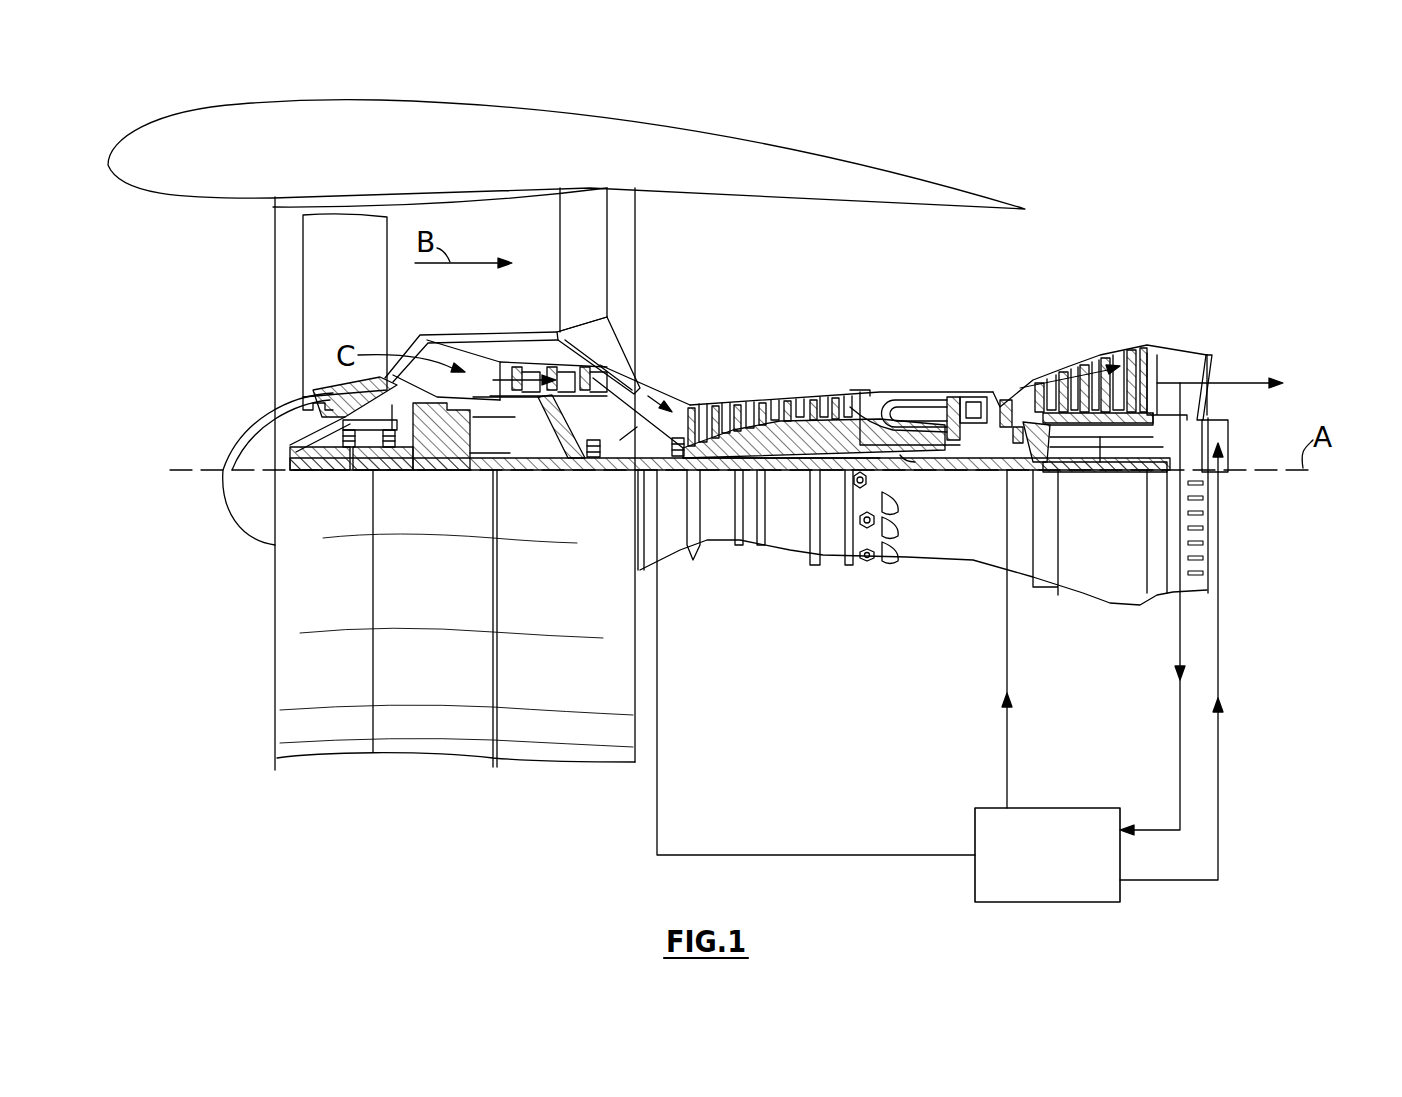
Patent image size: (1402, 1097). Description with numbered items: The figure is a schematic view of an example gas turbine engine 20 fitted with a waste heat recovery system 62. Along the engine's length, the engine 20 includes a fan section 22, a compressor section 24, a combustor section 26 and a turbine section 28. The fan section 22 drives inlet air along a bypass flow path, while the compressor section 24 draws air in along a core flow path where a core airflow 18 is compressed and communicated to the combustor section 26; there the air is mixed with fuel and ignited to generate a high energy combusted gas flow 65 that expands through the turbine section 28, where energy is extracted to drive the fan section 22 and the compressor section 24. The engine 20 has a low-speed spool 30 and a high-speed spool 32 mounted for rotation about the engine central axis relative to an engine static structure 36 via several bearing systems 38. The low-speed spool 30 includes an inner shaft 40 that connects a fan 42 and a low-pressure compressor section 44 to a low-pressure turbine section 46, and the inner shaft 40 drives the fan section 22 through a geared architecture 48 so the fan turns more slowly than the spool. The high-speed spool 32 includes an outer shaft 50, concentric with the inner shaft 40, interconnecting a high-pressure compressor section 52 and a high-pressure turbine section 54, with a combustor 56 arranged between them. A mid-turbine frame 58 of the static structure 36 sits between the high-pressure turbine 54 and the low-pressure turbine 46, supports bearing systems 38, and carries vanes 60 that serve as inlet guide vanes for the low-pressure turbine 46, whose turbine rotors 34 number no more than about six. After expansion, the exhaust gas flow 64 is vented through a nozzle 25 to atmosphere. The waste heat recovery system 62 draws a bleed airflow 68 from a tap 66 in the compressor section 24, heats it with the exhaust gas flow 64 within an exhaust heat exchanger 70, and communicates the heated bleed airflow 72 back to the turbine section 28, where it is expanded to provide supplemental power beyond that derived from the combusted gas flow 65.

The core airflow 18 is at (655, 380).
The gas turbine engine 20 is at (1103, 201).
The fan section 22 is at (515, 87).
The compressor section 24 is at (497, 310).
The nozzle 25 is at (1230, 345).
The combustor section 26 is at (955, 310).
The turbine section 28 is at (1165, 310).
The low-speed spool 30 is at (790, 488).
The high-speed spool 32 is at (833, 443).
The turbine rotors 34 is at (1105, 462).
The engine static structure 36 is at (830, 572).
The bearing systems 38 is at (353, 470).
The inner shaft 40 is at (640, 510).
The fan 42 is at (358, 319).
The low-pressure compressor section 44 is at (612, 328).
The low-pressure turbine section 46 is at (1100, 360).
The geared architecture 48 is at (465, 455).
The outer shaft 50 is at (910, 455).
The high-pressure compressor section 52 is at (760, 400).
The high-pressure turbine section 54 is at (967, 397).
The combustor 56 is at (907, 413).
The mid-turbine frame 58 is at (1016, 370).
The vanes 60 is at (1045, 470).
The waste heat recovery system 62 is at (1270, 731).
The exhaust gas flow 64 is at (1250, 380).
The combusted gas flow 65 is at (1057, 377).
The tap 66 is at (628, 431).
The bleed airflow 68 is at (672, 742).
The exhaust heat exchanger 70 is at (975, 880).
The heated bleed airflow 72 is at (1005, 740).